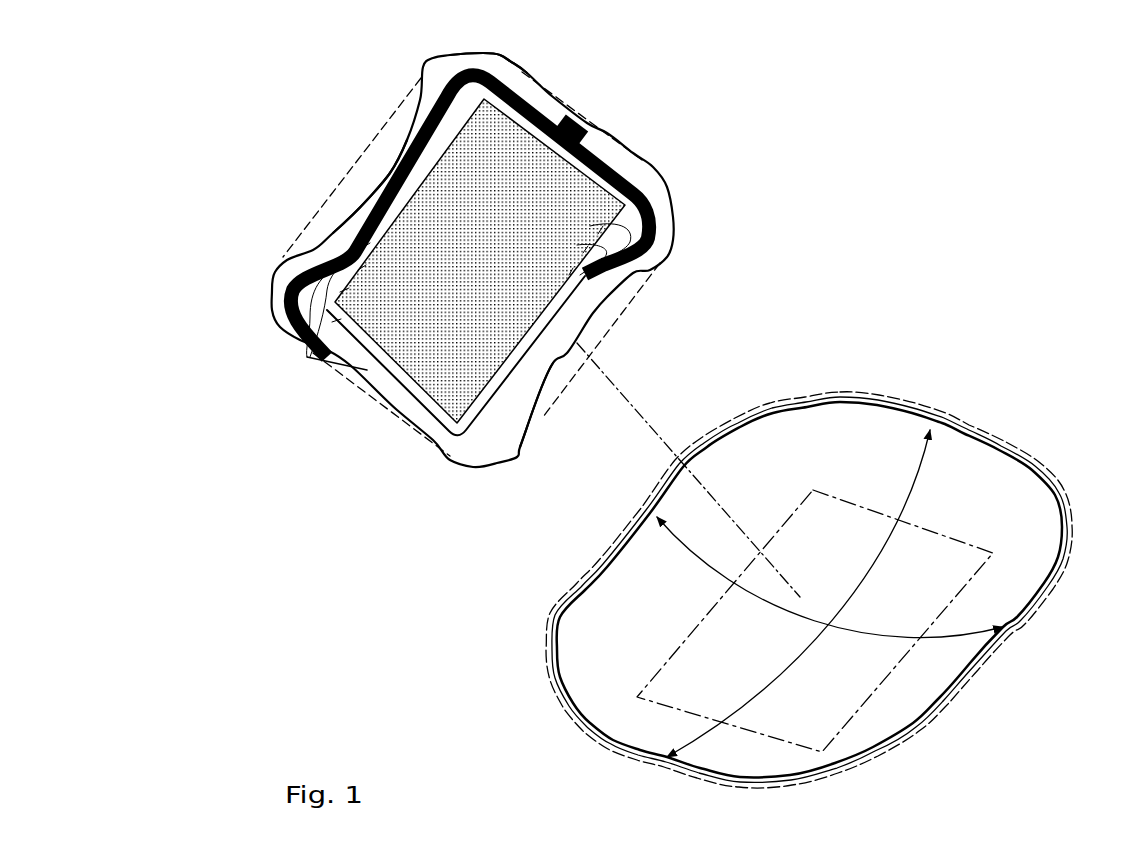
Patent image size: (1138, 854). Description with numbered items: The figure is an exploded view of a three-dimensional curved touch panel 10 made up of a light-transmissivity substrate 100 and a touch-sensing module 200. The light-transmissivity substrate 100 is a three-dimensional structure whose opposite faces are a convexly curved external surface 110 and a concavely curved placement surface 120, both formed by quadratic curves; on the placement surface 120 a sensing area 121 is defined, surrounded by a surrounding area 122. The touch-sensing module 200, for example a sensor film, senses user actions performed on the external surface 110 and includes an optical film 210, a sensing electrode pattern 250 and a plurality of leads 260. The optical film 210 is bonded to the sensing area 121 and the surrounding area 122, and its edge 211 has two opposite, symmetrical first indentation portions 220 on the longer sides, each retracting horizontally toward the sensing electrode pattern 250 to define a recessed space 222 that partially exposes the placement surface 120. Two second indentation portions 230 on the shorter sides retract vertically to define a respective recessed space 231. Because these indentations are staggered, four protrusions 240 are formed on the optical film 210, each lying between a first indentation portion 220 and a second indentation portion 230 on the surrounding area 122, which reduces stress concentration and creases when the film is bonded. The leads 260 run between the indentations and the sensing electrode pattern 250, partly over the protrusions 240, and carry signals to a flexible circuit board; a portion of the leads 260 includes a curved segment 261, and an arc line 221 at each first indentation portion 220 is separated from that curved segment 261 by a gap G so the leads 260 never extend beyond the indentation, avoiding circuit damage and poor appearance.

The three-dimensional curved touch panel 10 is at (965, 102).
The light-transmissivity substrate 100 is at (839, 585).
The external surface 110 is at (963, 434).
The placement surface 120 is at (813, 590).
The sensing area 121 is at (843, 707).
The surrounding area 122 is at (895, 748).
The touch-sensing module 200 is at (403, 497).
The optical film 210 is at (437, 430).
The edge 211 is at (494, 54).
The first indentation portions 220 is at (429, 303).
The arc line 221 is at (363, 210).
The recessed space 222 is at (346, 170).
The second indentation portions 230 is at (549, 95).
The recessed space 231 is at (600, 123).
The protrusions 240 is at (437, 70).
The sensing electrode pattern 250 is at (380, 357).
The leads 260 is at (309, 353).
The curved segment 261 is at (400, 152).
The gap G is at (565, 331).